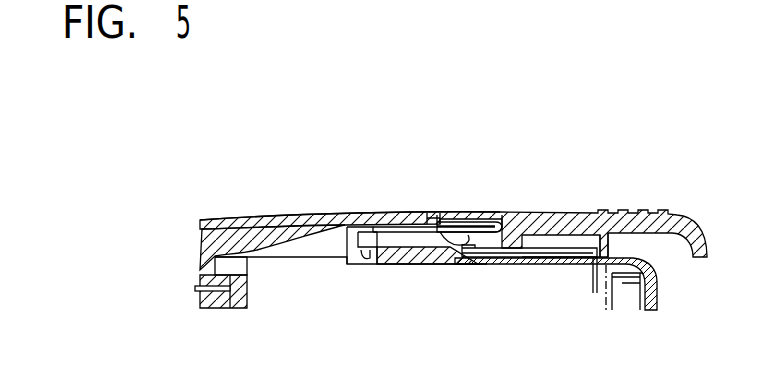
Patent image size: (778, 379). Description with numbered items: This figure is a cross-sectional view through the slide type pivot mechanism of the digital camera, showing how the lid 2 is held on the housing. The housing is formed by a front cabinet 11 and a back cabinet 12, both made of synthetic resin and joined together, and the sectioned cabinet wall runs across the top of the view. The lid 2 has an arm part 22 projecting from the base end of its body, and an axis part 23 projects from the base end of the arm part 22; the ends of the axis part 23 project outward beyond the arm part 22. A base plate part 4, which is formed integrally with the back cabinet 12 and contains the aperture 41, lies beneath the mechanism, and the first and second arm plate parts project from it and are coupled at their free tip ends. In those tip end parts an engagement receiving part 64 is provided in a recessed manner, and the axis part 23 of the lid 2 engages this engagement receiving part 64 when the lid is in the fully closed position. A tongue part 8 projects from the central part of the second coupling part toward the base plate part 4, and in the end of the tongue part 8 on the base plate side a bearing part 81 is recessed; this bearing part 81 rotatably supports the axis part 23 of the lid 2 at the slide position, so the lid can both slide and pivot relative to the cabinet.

The lid 2 is at (590, 213).
The front cabinet 11 is at (293, 217).
The axis part 23 is at (430, 217).
The arm part 22 is at (482, 217).
The engagement receiving part 64 is at (367, 266).
The tongue part 8 is at (410, 266).
The bearing part 81 is at (457, 266).
The aperture 41 is at (537, 267).
The base plate part 4 is at (578, 267).
The back cabinet 12 is at (653, 290).